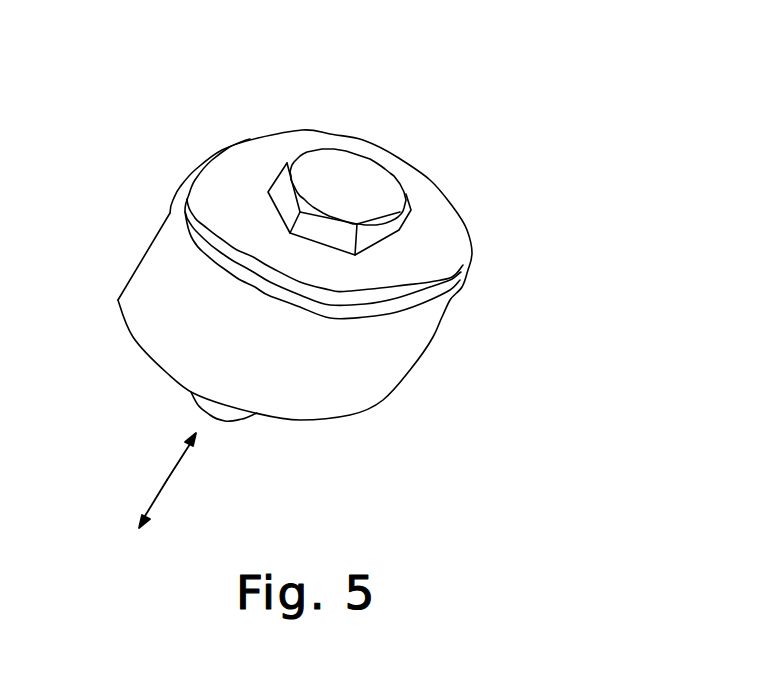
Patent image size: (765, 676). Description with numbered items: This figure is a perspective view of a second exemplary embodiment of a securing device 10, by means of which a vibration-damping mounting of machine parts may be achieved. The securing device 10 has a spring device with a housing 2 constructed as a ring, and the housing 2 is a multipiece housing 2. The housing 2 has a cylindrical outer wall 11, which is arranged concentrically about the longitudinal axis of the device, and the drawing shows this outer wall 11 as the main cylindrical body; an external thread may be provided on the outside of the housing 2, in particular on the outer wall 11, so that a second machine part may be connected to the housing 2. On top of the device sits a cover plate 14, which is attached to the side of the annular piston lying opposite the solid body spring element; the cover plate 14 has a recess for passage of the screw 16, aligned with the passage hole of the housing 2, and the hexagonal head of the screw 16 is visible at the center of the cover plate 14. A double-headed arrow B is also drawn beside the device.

The housing 2 is at (117, 232).
The securing device 10 is at (455, 122).
The cylindrical outer wall 11 is at (395, 345).
The cover plate 14 is at (445, 240).
The screw 16 is at (337, 178).
The direction of movement B is at (172, 479).